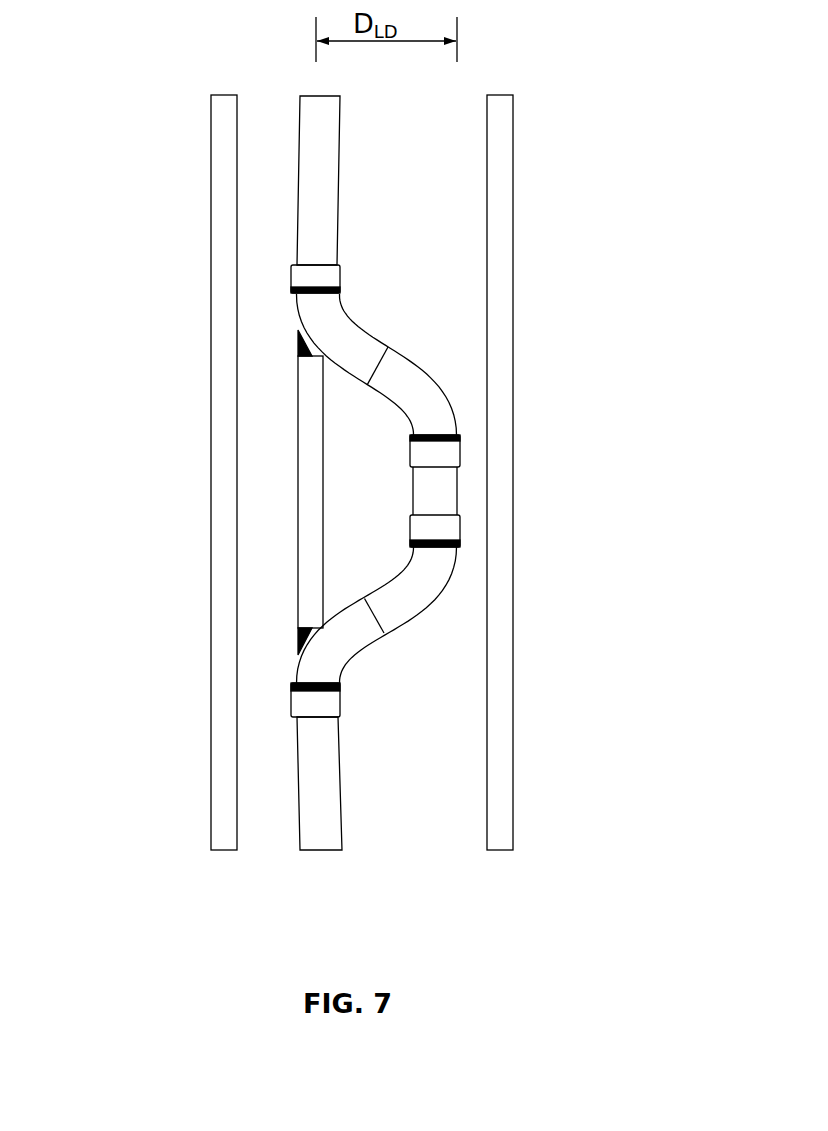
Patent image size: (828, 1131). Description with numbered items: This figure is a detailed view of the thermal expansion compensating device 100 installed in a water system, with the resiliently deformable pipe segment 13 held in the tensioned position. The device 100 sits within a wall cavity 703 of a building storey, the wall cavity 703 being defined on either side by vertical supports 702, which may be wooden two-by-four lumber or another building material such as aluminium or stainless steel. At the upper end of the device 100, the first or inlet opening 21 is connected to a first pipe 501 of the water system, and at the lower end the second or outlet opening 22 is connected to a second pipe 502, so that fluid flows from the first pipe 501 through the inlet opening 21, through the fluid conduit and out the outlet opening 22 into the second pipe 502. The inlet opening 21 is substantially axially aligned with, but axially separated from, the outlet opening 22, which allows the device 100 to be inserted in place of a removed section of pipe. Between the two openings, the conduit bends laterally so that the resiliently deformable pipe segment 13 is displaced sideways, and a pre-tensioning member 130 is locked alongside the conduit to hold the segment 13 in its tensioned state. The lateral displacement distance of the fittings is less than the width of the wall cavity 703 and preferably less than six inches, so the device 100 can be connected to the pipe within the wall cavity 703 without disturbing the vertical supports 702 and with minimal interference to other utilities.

The vertical supports 702 is at (516, 105).
The first pipe 501 is at (348, 193).
The first opening 21 is at (342, 280).
The thermal expansion compensating device 100 is at (448, 378).
The resiliently deformable pipe segment 13 is at (461, 492).
The pre-tensioning member 130 is at (286, 467).
The second opening 22 is at (343, 700).
The second pipe 502 is at (343, 777).
The wall cavity 703 is at (425, 833).